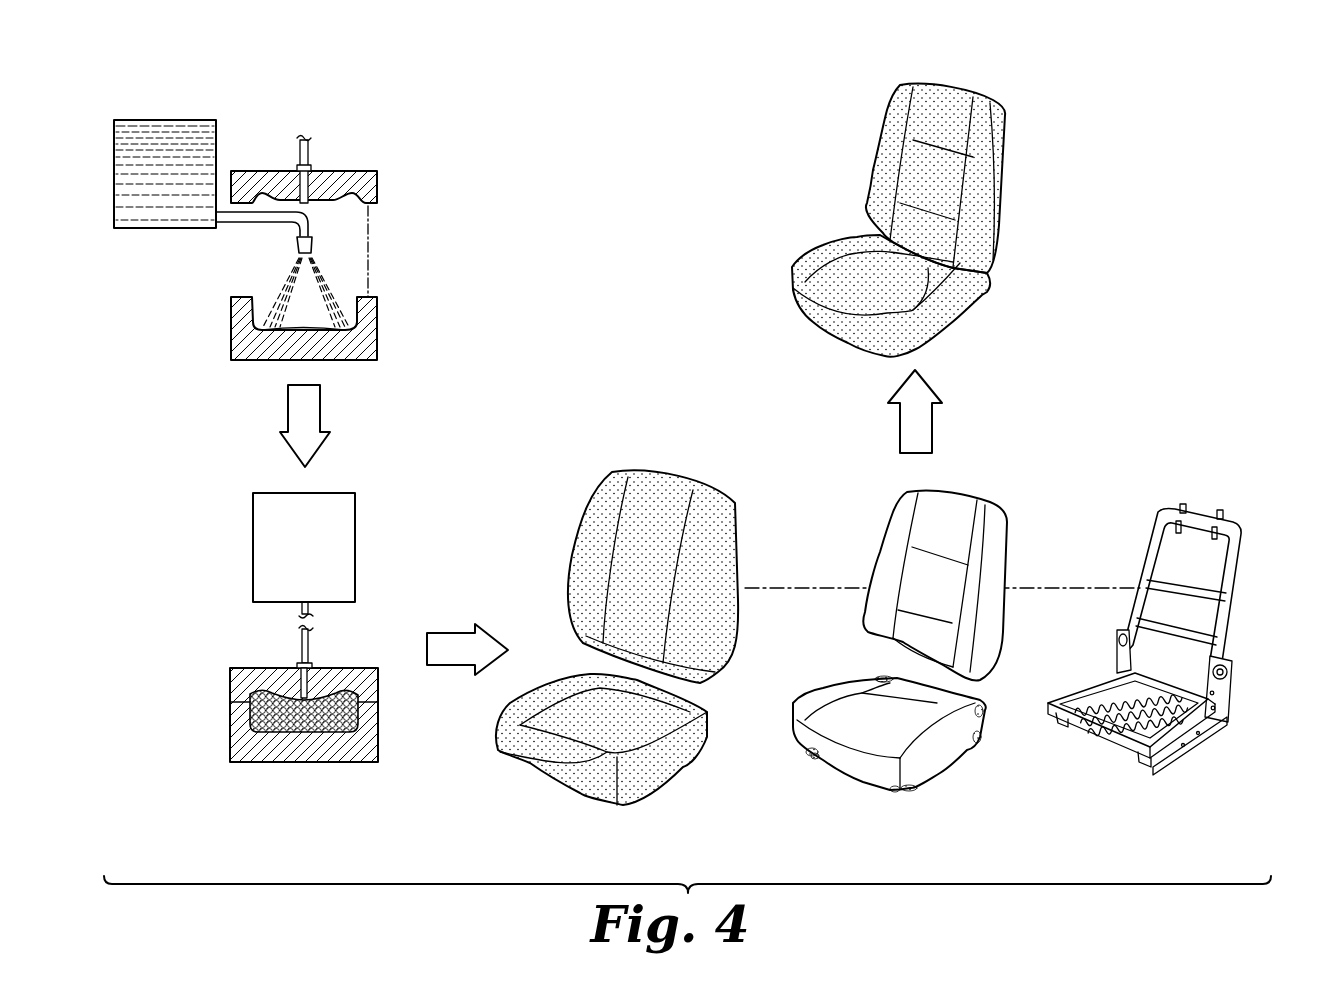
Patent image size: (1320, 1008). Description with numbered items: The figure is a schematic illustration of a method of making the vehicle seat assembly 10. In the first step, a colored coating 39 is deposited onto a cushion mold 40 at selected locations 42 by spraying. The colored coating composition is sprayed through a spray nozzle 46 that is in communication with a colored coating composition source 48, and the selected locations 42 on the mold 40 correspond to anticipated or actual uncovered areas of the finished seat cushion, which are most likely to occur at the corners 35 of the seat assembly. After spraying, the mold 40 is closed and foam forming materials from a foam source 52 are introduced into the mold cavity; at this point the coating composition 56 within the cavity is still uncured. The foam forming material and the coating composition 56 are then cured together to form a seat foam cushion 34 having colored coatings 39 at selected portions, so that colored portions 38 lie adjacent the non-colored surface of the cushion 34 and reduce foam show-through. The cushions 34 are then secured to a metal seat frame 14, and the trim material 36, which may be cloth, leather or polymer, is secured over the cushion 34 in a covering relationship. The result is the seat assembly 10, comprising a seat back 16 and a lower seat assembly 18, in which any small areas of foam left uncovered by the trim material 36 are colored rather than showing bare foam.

The vehicle seat assembly 10 is at (909, 221).
The seat frame 14 is at (1240, 588).
The seat back 16 is at (1003, 190).
The lower seat assembly 18 is at (963, 317).
The seat foam cushion 34 is at (840, 795).
The corners 35 is at (988, 713).
The trim material 36 is at (553, 677).
The colored portions 38 is at (885, 677).
The colored coating 39 is at (880, 680).
The cushion mold 40 is at (450, 165).
The selected locations 42 is at (253, 318).
The spray nozzle 46 is at (297, 246).
The colored coating composition source 48 is at (160, 120).
The foam source 52 is at (304, 493).
The coating composition 56 is at (258, 712).